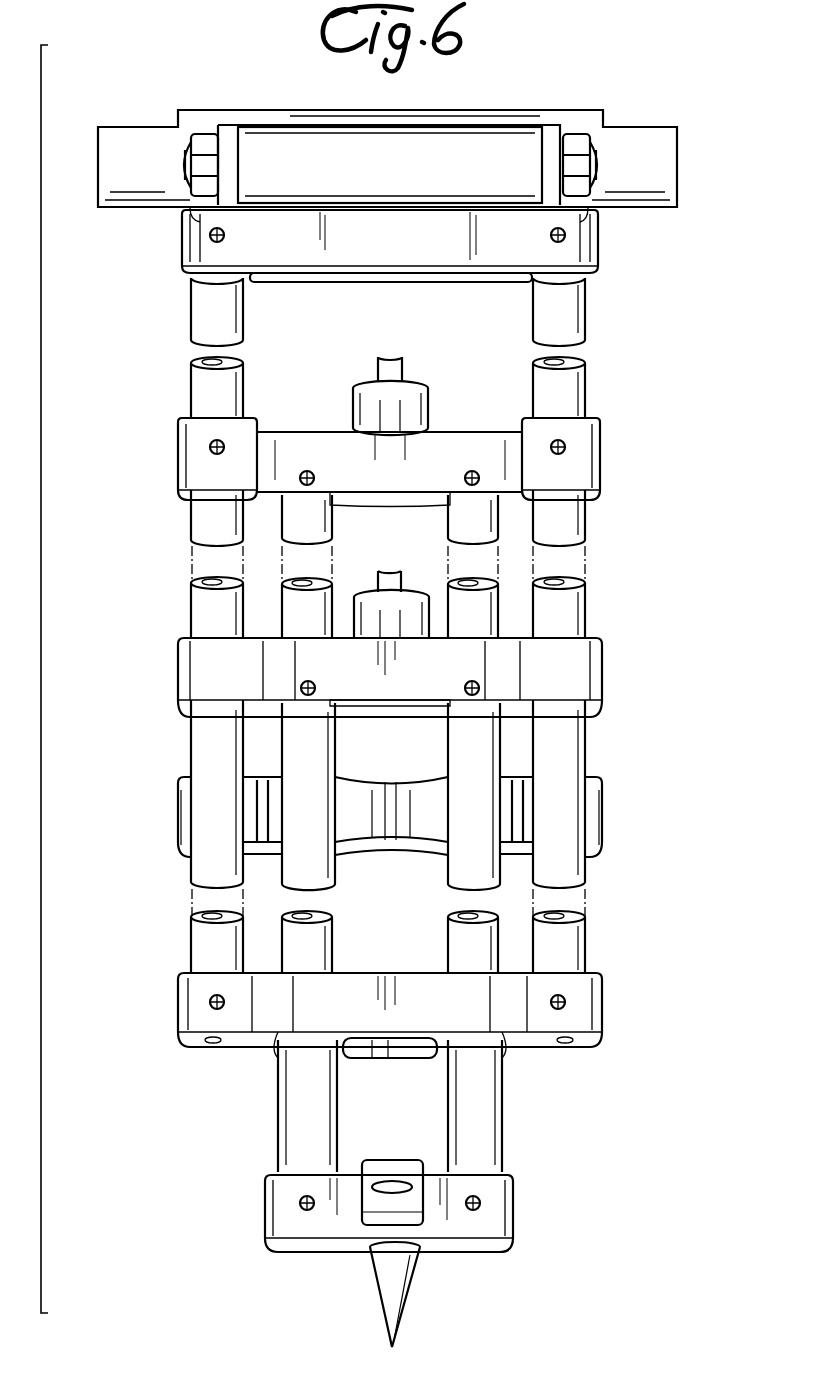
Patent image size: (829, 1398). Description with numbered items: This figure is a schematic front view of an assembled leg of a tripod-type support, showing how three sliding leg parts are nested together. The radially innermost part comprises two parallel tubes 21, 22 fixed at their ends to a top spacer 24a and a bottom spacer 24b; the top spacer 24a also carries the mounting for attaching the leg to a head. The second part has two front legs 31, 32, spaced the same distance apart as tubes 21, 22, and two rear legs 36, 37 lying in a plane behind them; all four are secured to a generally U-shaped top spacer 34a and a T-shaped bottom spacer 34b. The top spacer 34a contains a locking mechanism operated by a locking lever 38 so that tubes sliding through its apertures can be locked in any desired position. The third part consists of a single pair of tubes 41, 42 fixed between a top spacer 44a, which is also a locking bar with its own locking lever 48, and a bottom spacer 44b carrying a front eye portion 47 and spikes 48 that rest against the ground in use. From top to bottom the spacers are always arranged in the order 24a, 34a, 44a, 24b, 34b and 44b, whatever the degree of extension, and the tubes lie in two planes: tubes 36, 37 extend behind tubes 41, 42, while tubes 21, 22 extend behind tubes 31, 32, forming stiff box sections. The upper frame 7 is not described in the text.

The mounting frame 7 is at (493, 143).
The top spacer 24a is at (602, 245).
The tube 21 is at (190, 305).
The tube 22 is at (585, 302).
The leg 31 is at (190, 383).
The leg 32 is at (585, 385).
The locking lever 38 is at (410, 390).
The top spacer 34a is at (600, 452).
The leg 36 is at (332, 524).
The leg 37 is at (448, 526).
The spike 48 is at (410, 594).
The top spacer 44a is at (602, 660).
The tube 41 is at (335, 746).
The tube 42 is at (448, 740).
The bottom spacer 24b is at (602, 800).
The bottom spacer 34b is at (602, 995).
The front eye portion 47 is at (405, 1160).
The bottom spacer 44b is at (513, 1218).